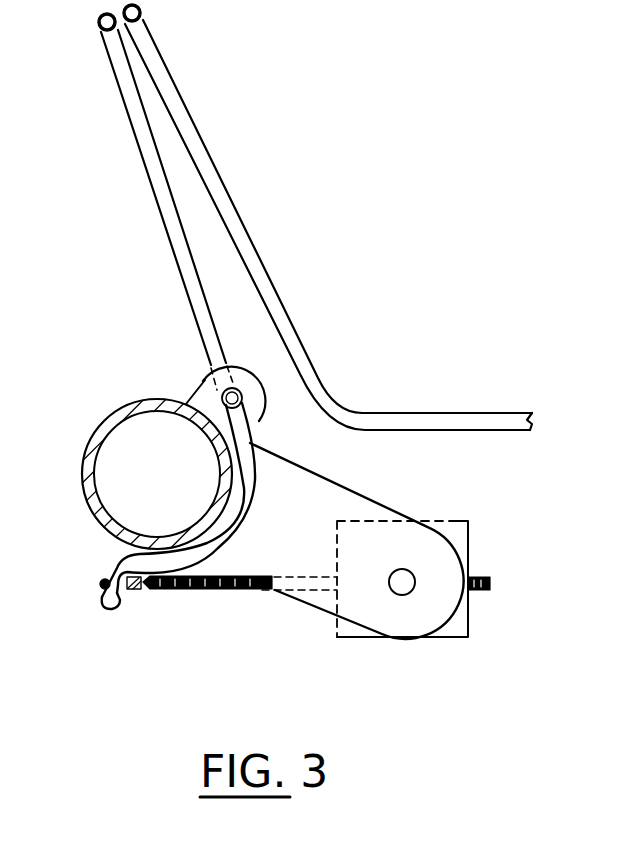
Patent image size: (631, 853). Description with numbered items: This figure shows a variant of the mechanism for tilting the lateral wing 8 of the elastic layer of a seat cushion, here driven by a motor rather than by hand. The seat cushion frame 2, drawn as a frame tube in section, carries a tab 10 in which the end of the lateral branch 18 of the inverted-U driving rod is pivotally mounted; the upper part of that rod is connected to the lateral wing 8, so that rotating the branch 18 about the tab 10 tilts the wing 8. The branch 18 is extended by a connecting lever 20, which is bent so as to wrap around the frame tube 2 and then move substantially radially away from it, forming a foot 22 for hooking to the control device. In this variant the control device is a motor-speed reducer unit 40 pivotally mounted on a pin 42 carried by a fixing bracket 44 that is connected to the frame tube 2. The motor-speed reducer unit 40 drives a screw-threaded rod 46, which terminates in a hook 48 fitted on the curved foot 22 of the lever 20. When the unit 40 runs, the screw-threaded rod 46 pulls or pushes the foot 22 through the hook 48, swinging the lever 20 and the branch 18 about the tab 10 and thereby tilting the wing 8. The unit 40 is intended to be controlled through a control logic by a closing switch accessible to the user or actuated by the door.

The seat cushion frame 2 is at (103, 428).
The lateral wing 8 is at (229, 196).
The tab 10 is at (208, 380).
The lateral branch 18 is at (169, 235).
The connecting lever 20 is at (249, 504).
The foot 22 is at (120, 603).
The motor-speed reducer unit 40 is at (450, 522).
The pin 42 is at (403, 595).
The fixing bracket 44 is at (322, 488).
The screw-threaded rod 46 is at (213, 596).
The hook 48 is at (103, 582).